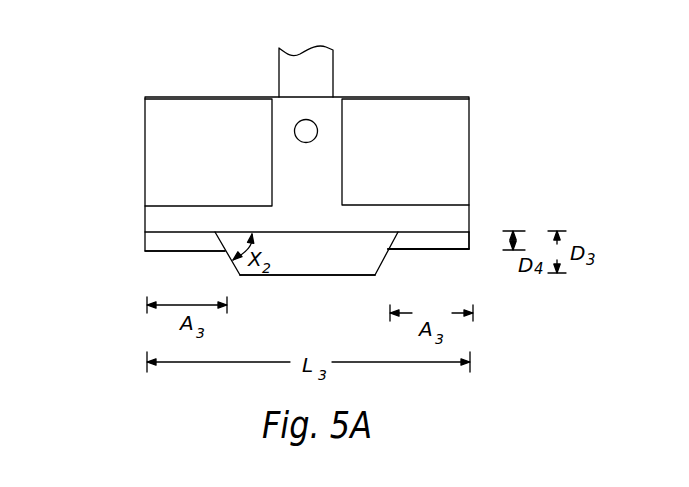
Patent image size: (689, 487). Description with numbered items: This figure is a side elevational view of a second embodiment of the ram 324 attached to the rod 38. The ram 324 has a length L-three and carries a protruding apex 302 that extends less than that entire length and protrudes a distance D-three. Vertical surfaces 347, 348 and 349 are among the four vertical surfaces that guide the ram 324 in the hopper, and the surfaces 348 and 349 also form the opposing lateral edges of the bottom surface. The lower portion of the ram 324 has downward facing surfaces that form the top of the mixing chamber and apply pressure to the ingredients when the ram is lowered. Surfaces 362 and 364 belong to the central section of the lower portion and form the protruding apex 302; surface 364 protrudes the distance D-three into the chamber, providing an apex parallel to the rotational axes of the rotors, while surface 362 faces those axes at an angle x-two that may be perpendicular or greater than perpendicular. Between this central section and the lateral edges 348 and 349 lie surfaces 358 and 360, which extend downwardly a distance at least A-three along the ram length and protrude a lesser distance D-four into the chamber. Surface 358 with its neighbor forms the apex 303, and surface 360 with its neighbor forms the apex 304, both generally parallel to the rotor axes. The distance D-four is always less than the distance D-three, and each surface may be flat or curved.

The ram 324 is at (177, 83).
The rod 38 is at (279, 55).
The vertical surface 349 is at (145, 117).
The vertical surface 348 is at (470, 110).
The vertical surface 347 is at (453, 220).
The downward facing surface 360 is at (190, 243).
The apex 304 is at (198, 253).
The apex 303 is at (240, 275).
The protruding apex 302 is at (283, 275).
The downward facing surface 364 is at (350, 262).
The downward facing surface 362 is at (387, 262).
The downward facing surface 358 is at (440, 238).